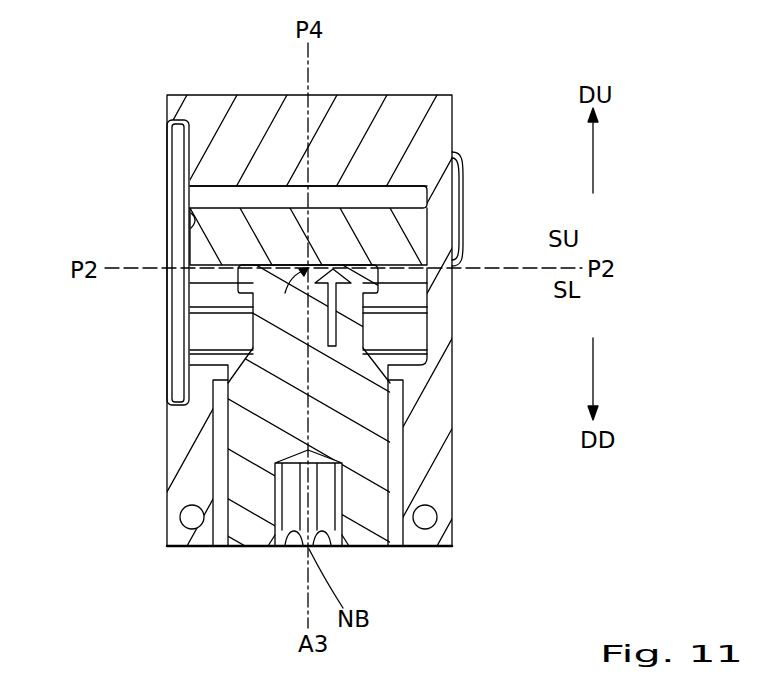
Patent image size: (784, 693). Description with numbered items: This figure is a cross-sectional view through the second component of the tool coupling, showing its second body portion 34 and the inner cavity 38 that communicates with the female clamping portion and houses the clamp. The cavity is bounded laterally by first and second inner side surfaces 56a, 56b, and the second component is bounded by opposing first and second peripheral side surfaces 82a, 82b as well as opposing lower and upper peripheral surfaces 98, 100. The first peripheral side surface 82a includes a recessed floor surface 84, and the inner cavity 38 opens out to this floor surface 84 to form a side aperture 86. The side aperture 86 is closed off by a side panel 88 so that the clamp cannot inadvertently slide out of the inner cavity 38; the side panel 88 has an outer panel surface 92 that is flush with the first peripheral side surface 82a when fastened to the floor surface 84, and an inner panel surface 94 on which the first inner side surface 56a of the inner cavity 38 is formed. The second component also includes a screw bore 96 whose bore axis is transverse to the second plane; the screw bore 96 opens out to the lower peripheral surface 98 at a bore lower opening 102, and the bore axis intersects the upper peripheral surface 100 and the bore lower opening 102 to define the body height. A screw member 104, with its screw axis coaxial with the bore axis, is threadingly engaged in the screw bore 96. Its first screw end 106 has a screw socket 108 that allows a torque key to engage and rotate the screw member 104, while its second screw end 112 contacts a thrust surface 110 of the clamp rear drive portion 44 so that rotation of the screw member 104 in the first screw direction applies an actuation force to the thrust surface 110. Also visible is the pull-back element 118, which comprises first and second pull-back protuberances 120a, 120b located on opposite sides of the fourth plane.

The upper peripheral surface 100 is at (373, 95).
The second body portion 34 is at (406, 149).
The inner cavity 38 is at (376, 208).
The clamp rear drive portion 44 is at (351, 254).
The first inner side surface 56a is at (193, 210).
The second inner side surface 56b is at (414, 225).
The recessed floor surface 84 is at (190, 151).
The inner panel surface 94 is at (195, 118).
The side aperture 86 is at (182, 292).
The side panel 88 is at (174, 384).
The outer panel surface 92 is at (165, 312).
The first peripheral side surface 82a is at (165, 444).
The second peripheral side surface 82b is at (453, 470).
The first pull-back protuberance 120a is at (222, 342).
The second pull-back protuberance 120b is at (420, 328).
The pull-back element 118 is at (398, 343).
The thrust surface 110 is at (383, 297).
The second screw end 112 is at (363, 270).
The screw member 104 is at (359, 432).
The screw bore 96 is at (233, 548).
The lower peripheral surface 98 is at (221, 512).
The screw socket 108 is at (289, 522).
The bore lower opening 102 is at (347, 552).
The first screw end 106 is at (378, 552).